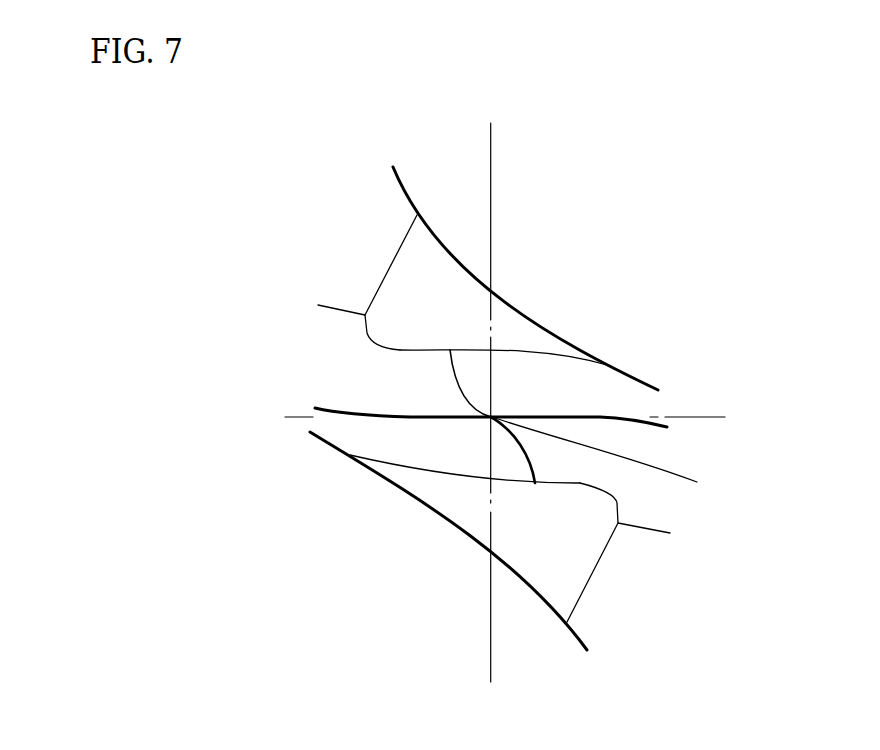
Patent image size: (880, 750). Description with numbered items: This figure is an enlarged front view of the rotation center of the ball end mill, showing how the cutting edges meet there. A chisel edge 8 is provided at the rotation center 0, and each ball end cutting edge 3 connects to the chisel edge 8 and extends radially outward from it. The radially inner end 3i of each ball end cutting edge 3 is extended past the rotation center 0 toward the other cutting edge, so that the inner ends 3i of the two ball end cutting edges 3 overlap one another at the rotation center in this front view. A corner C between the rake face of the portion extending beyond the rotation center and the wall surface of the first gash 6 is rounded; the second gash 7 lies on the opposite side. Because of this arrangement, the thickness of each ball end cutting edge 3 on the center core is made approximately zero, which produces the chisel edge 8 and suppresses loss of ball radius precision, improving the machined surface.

The second gash 7 is at (435, 285).
The first gash 6 is at (468, 377).
The corner C is at (472, 403).
The ball end cutting edge 3 is at (327, 413).
The inner end 3i is at (610, 459).
The rotation center 0 is at (490, 418).
The chisel edge 8 is at (495, 422).